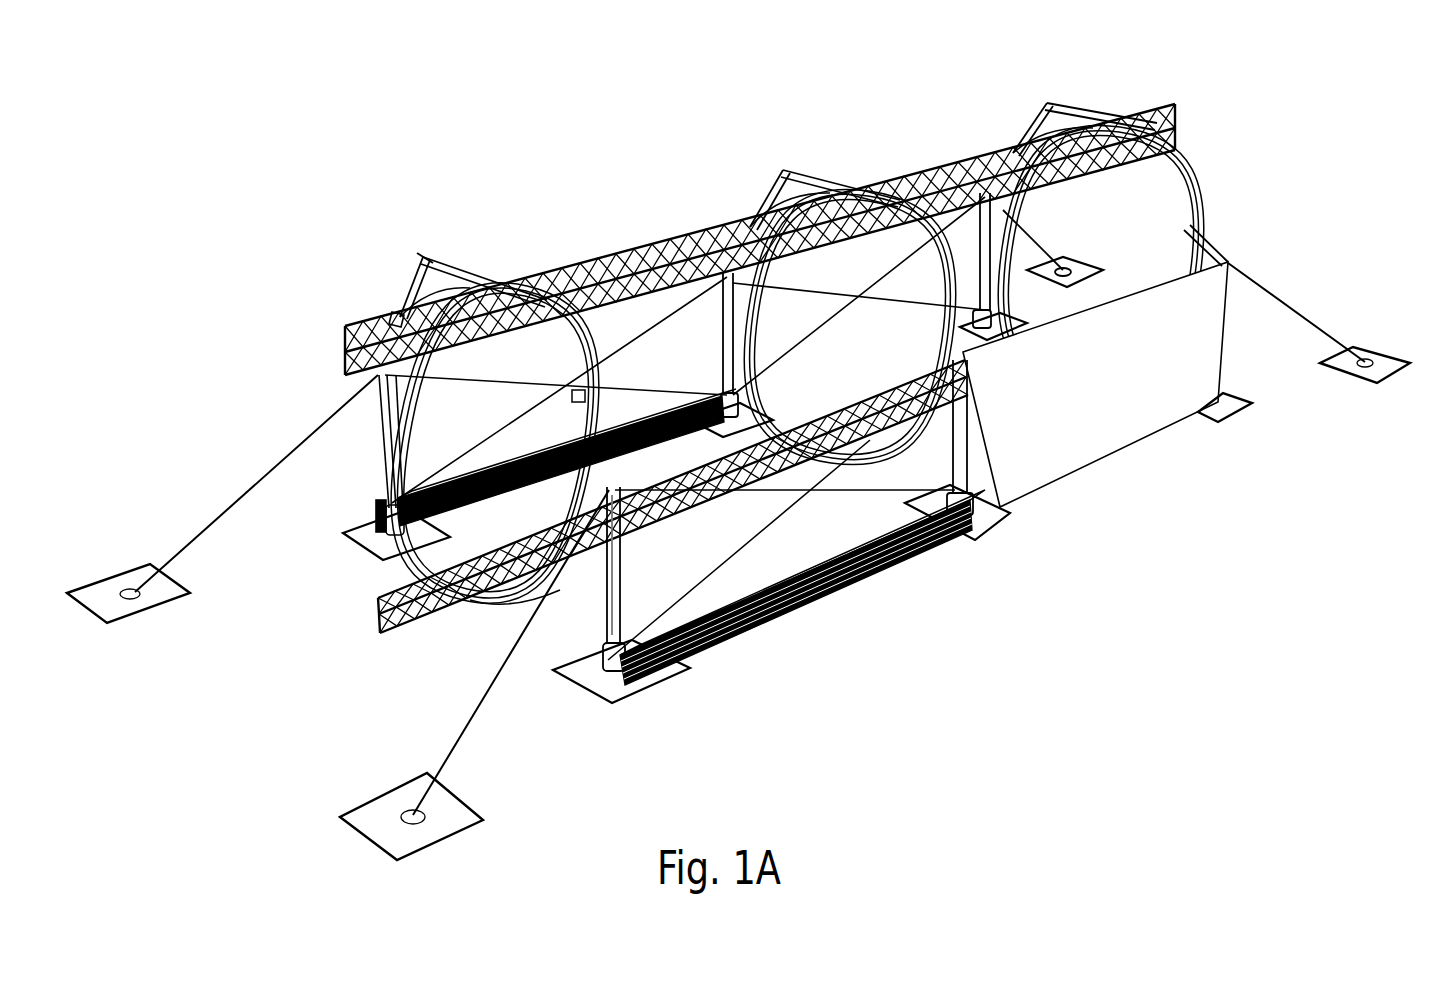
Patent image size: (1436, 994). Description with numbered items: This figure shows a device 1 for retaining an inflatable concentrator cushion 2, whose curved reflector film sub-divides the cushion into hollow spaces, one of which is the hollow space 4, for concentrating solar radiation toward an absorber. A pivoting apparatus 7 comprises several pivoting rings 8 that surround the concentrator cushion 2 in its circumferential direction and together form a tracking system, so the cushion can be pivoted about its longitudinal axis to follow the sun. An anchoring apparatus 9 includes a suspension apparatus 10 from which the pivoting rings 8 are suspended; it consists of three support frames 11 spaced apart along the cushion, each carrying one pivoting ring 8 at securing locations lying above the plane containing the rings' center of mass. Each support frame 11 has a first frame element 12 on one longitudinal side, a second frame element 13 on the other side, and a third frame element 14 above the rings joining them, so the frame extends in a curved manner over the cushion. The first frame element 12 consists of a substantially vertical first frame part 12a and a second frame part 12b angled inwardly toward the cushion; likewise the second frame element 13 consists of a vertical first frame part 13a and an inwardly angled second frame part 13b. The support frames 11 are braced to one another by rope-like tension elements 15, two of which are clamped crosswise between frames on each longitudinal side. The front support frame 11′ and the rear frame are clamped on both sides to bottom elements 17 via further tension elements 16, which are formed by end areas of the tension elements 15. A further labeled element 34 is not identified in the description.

The device 1 is at (640, 195).
The concentrator cushion 2 is at (802, 608).
The hollow space 4 is at (760, 239).
The pivoting apparatus 7 is at (797, 188).
The pivoting rings 8 is at (415, 437).
The anchoring apparatus 9 is at (422, 252).
The suspension apparatus 10 is at (765, 190).
The support frames 11 is at (835, 175).
The front support frame 11′ is at (622, 579).
The first frame element 12 is at (336, 421).
The first frame part 12a is at (385, 495).
The second frame part 12b is at (397, 318).
The second frame element 13 is at (622, 553).
The first frame part 13a is at (707, 640).
The second frame part 13b is at (617, 458).
The third frame element 14 is at (484, 271).
The tension elements 15 is at (733, 553).
The further tension elements 16 is at (1297, 312).
The bottom elements 17 is at (355, 795).
The base plate 34 is at (375, 548).